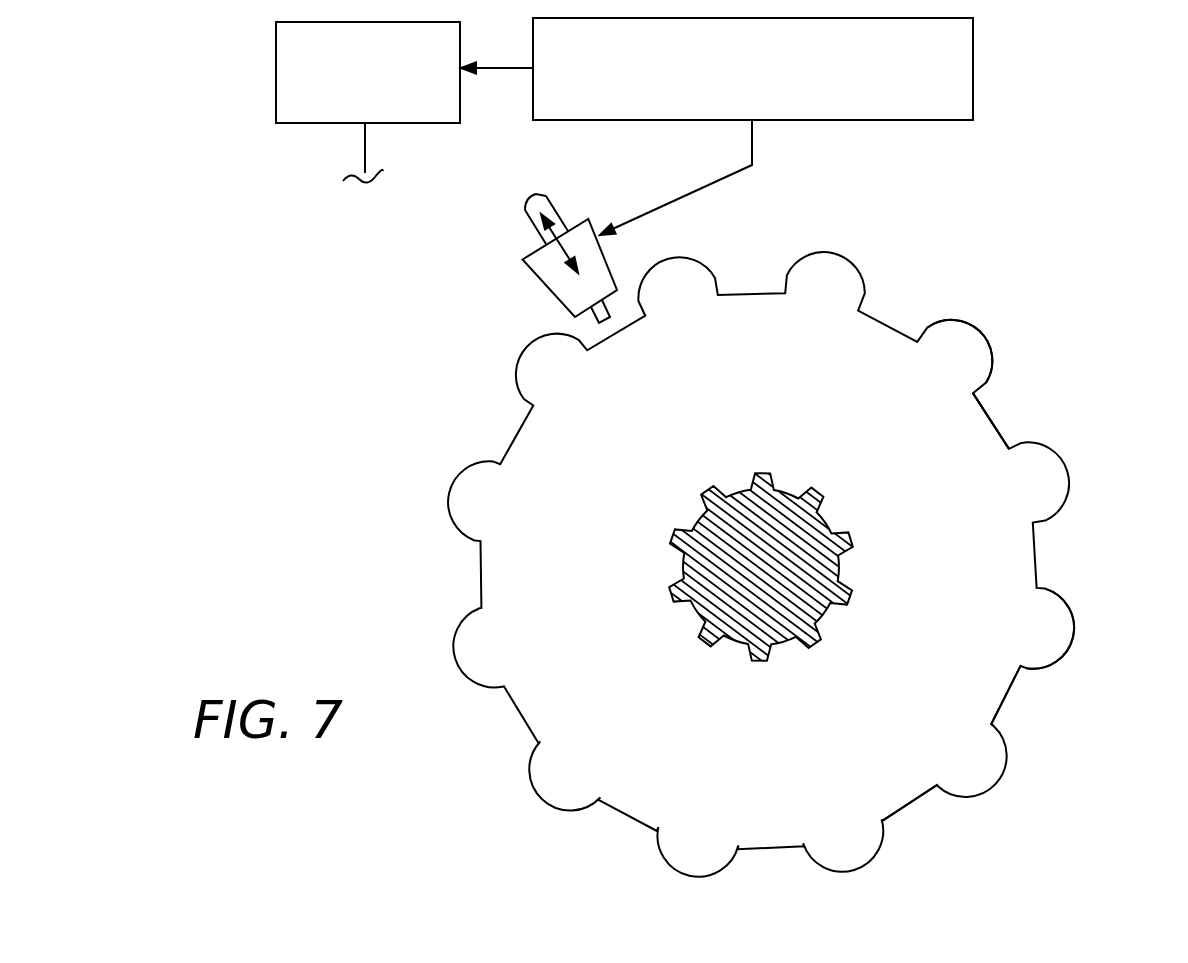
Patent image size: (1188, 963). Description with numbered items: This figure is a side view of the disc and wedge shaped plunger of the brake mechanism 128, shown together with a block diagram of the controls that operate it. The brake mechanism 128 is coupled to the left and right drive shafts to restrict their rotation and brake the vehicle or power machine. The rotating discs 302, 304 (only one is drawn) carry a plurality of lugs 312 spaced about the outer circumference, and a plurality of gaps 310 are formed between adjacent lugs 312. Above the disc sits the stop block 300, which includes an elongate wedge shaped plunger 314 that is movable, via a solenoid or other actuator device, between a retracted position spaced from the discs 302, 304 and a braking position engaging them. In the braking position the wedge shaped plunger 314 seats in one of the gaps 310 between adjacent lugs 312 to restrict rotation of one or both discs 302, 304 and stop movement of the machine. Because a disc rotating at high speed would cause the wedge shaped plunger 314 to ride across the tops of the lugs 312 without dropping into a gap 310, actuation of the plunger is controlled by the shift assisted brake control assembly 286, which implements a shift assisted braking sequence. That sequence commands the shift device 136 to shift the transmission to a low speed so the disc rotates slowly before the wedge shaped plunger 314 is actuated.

The shift device 136 is at (303, 123).
The shift assisted brake control assembly 286 is at (978, 33).
The stop block 300 is at (569, 236).
The wedge shaped plunger 314 is at (503, 227).
The brake mechanism 128 is at (909, 307).
The rotating disc 302 is at (990, 350).
The rotating disc 304 is at (991, 421).
The gaps 310 is at (1062, 558).
The lugs 312 is at (1005, 773).